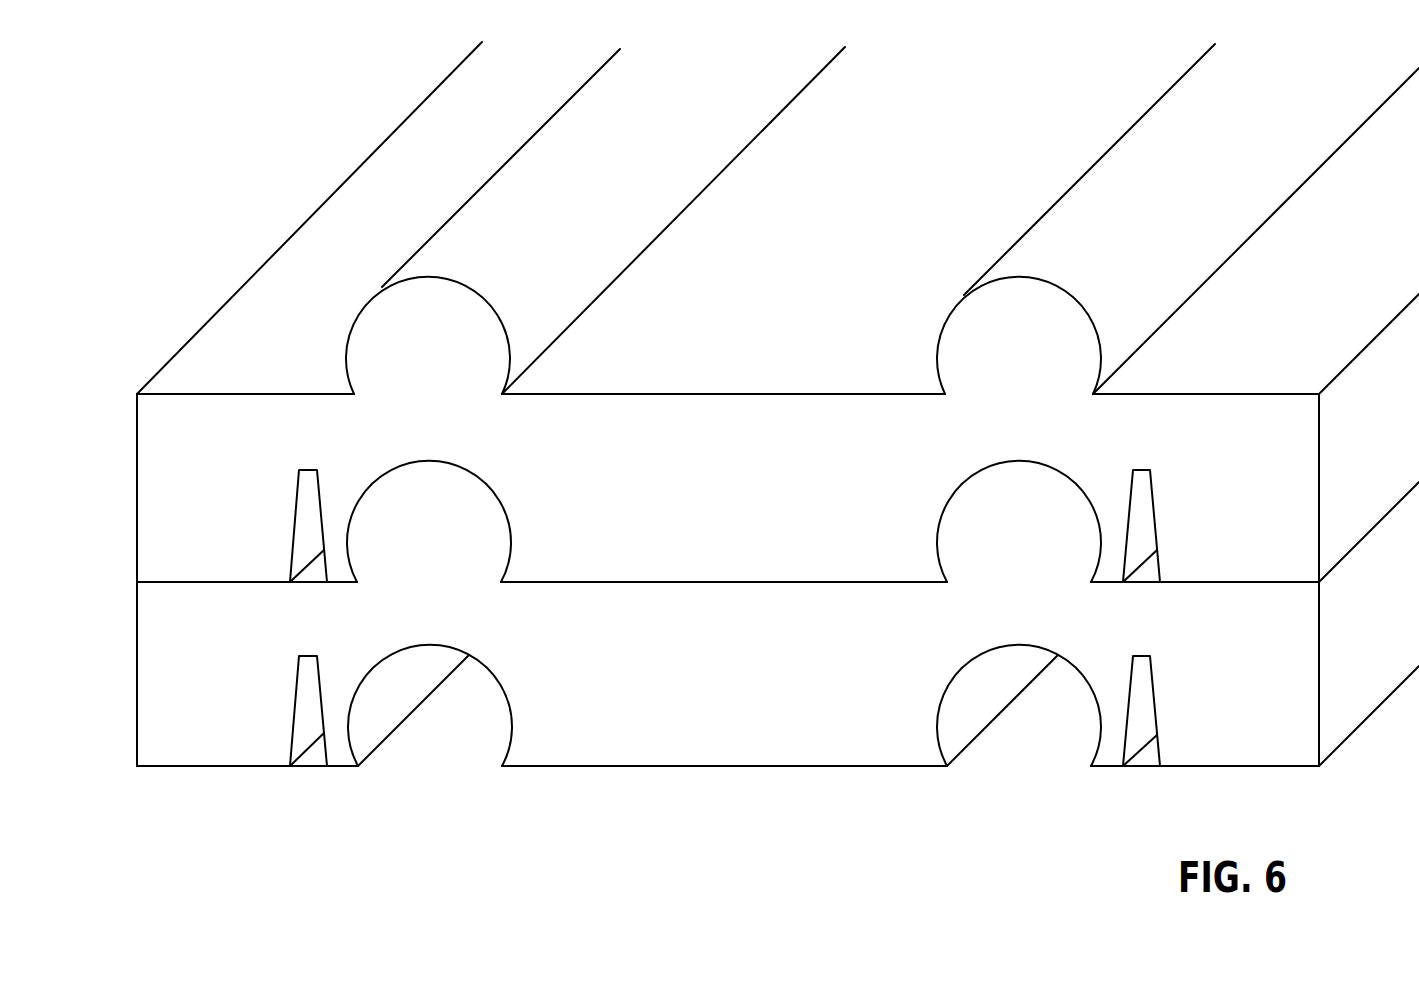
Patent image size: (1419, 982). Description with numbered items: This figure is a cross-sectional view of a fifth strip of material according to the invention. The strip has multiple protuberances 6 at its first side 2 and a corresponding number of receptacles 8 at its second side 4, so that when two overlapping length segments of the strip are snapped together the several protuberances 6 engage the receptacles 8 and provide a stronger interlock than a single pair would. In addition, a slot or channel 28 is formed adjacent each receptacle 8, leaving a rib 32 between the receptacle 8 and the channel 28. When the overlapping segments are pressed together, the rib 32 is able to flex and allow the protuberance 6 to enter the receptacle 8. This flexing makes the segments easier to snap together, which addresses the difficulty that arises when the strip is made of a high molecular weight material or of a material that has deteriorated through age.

The first side 2 is at (778, 312).
The second side 4 is at (778, 726).
The protuberances 6 is at (721, 265).
The receptacles 8 is at (724, 698).
The slot or channel 28 is at (683, 671).
The rib 32 is at (725, 777).